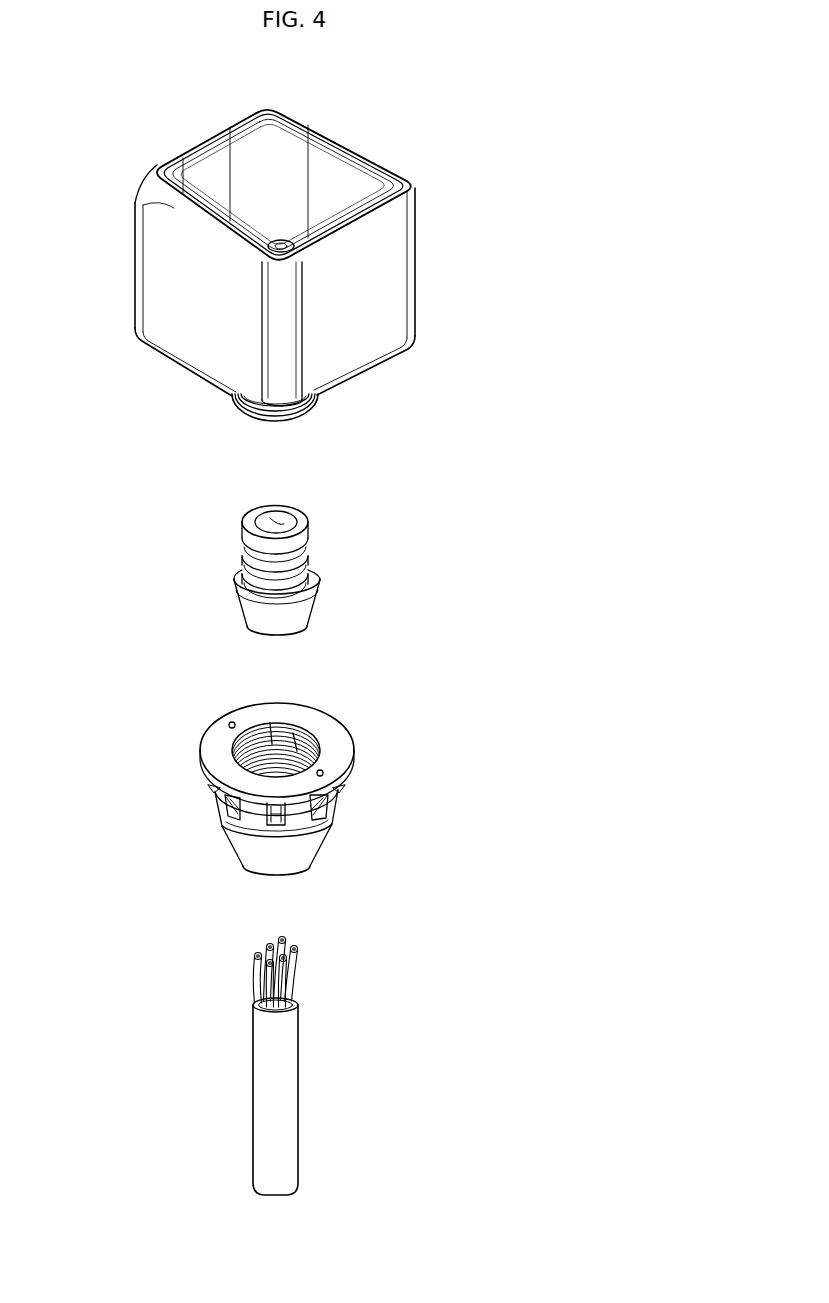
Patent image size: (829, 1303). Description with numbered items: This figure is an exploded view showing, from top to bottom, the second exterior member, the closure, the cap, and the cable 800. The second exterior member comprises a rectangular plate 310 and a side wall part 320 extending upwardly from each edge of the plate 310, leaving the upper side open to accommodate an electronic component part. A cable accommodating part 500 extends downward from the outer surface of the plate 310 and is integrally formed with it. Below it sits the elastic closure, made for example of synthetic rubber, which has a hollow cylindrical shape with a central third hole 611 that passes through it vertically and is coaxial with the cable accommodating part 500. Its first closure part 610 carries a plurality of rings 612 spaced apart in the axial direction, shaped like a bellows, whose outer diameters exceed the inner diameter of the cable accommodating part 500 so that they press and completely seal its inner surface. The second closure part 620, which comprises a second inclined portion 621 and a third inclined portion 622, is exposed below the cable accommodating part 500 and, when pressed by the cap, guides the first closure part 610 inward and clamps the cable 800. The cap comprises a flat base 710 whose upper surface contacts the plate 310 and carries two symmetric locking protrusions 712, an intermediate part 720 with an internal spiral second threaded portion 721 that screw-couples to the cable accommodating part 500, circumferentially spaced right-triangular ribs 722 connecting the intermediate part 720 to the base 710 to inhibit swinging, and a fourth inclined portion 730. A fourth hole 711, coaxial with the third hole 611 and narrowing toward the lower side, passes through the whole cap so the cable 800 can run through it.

The plate 310 is at (357, 380).
The side wall part 320 is at (385, 257).
The cable accommodating part 500 is at (237, 405).
The first closure part 610 is at (263, 542).
The third hole 611 is at (284, 515).
The rings 612 is at (245, 518).
The second closure part 620 is at (184, 582).
The second inclined portion 621 is at (240, 580).
The third inclined portion 622 is at (248, 612).
The base 710 is at (279, 730).
The fourth hole 711 is at (306, 738).
The locking protrusion 712 is at (324, 775).
The intermediate part 720 is at (269, 822).
The second threaded portion 721 is at (266, 723).
The ribs 722 is at (325, 818).
The fourth inclined portion 730 is at (250, 855).
The cable 800 is at (312, 1073).